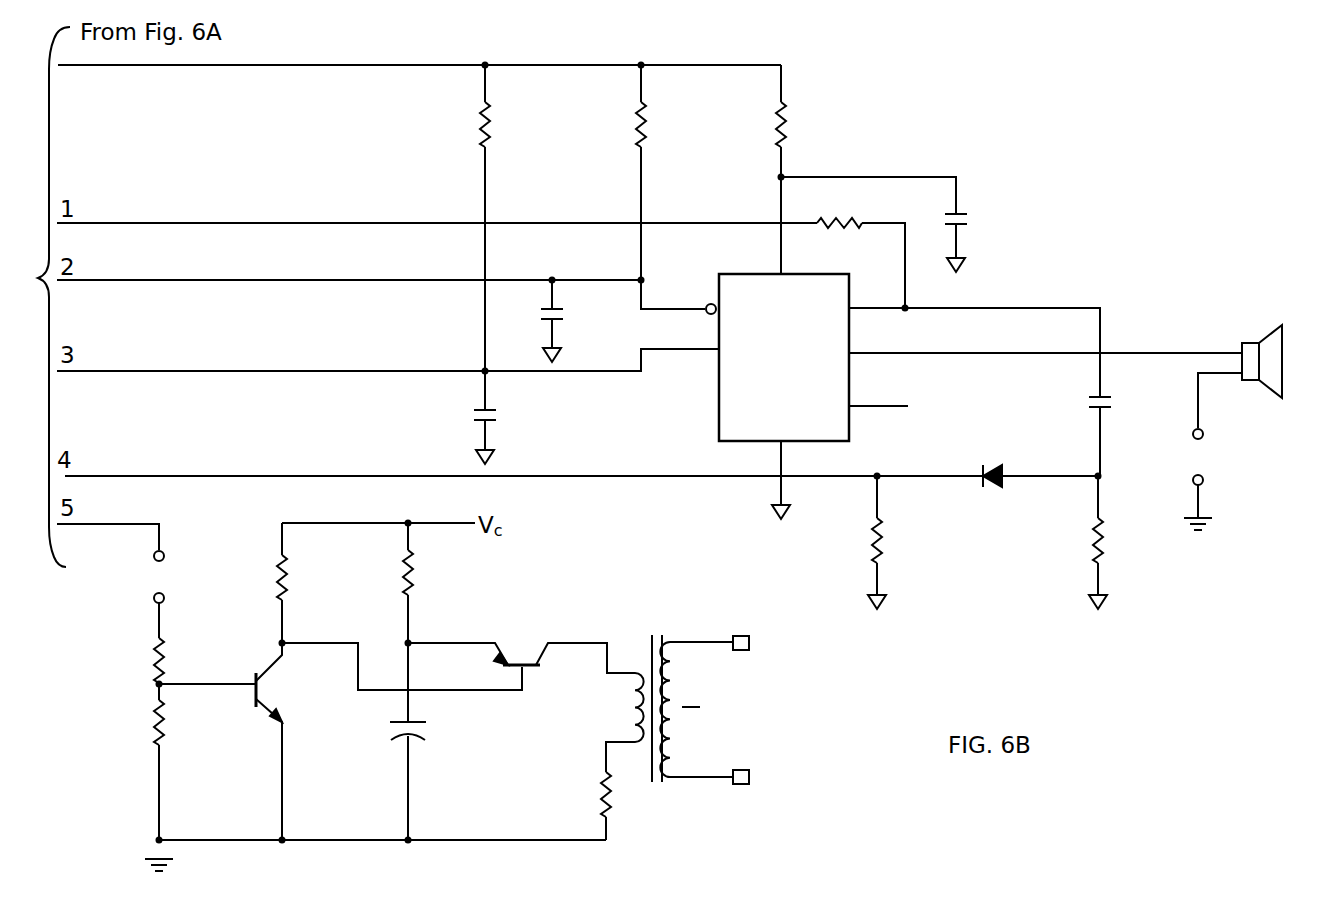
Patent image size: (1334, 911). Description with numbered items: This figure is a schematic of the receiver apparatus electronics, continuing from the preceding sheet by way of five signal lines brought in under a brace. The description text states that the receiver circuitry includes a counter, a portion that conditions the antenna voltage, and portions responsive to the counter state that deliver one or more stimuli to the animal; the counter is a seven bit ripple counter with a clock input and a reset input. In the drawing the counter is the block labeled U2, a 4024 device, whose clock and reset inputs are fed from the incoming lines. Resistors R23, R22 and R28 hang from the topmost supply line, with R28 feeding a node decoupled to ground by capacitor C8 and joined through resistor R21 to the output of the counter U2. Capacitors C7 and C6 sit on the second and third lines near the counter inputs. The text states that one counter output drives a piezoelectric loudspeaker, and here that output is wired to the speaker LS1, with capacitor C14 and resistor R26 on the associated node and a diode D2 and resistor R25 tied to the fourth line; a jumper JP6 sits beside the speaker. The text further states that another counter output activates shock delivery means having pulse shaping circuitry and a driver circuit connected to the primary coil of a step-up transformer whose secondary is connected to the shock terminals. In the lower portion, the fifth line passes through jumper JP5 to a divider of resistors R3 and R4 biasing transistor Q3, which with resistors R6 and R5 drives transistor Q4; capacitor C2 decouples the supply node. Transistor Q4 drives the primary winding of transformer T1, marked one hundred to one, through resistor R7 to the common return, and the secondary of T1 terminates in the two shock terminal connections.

The resistor 1 MEG R23 is at (522, 237).
The resistor 1 MEG R22 is at (678, 172).
The resistor 100 R28 is at (807, 169).
The resistor 2.7 MEG R21 is at (849, 249).
The capacitor .1u C8 is at (979, 232).
The capacitor 47 C7 is at (569, 320).
The capacitor 470 C6 is at (507, 424).
The 4024 counter IC U2 is at (782, 396).
The capacitor .01 C14 is at (1121, 419).
The speaker LS1 is at (1258, 349).
The jumper JP6 is at (1219, 479).
The diode 1N4148 D2 is at (1010, 478).
The resistor 100K R25 is at (909, 541).
The resistor 22K R26 is at (1123, 542).
The jumper JP5 is at (184, 577).
The resistor 3.3K R3 is at (191, 651).
The resistor 10K R4 is at (186, 770).
The resistor 100 1/4w R6 is at (323, 583).
The resistor 18 1/4w R5 is at (439, 583).
The transistor 2N3904 Q3 is at (318, 741).
The transistor TIP42 Q4 is at (521, 642).
The capacitor 470 C2 is at (434, 741).
The transformer 100:1 T1 is at (692, 708).
The resistor 1 ohm 1/4w R7 is at (582, 791).